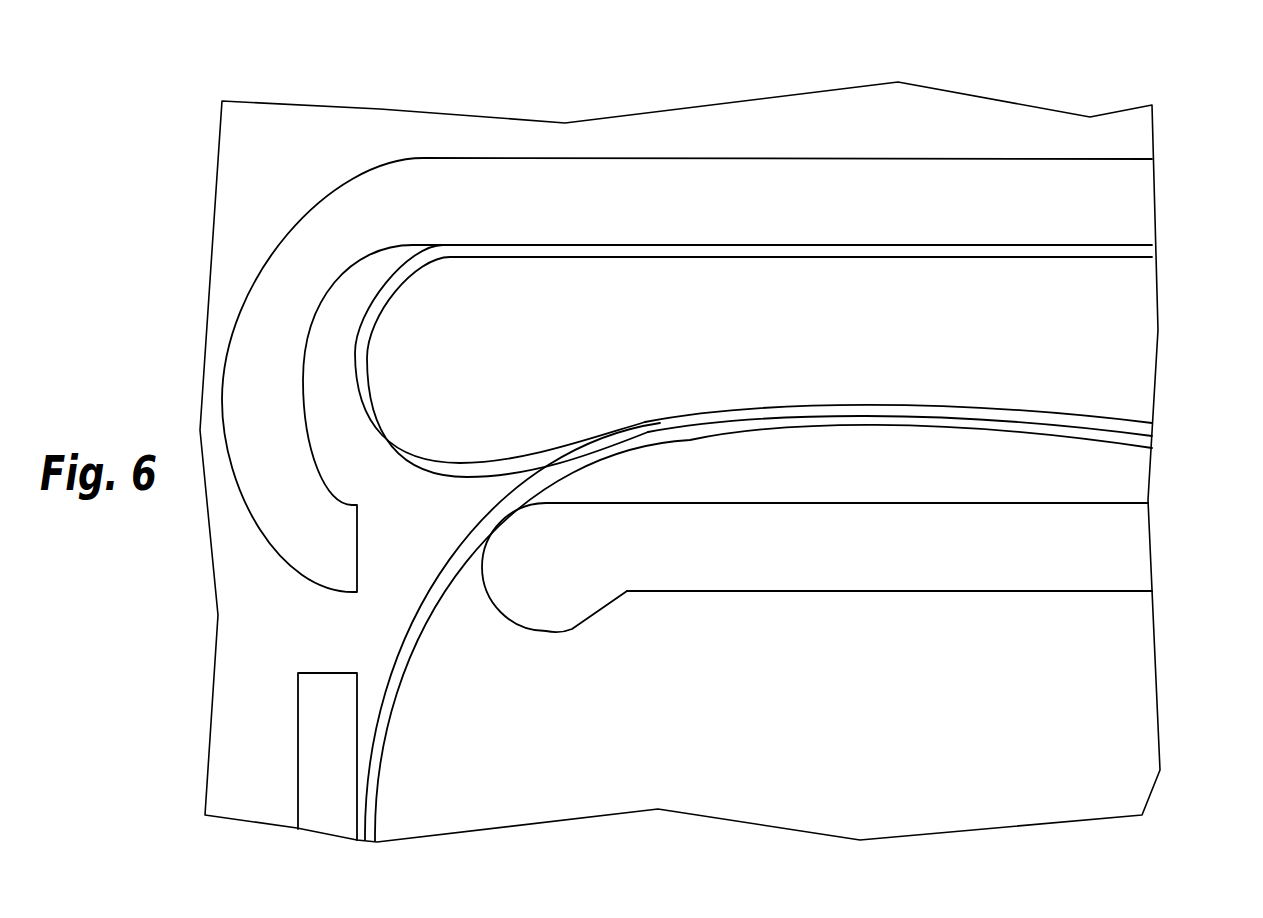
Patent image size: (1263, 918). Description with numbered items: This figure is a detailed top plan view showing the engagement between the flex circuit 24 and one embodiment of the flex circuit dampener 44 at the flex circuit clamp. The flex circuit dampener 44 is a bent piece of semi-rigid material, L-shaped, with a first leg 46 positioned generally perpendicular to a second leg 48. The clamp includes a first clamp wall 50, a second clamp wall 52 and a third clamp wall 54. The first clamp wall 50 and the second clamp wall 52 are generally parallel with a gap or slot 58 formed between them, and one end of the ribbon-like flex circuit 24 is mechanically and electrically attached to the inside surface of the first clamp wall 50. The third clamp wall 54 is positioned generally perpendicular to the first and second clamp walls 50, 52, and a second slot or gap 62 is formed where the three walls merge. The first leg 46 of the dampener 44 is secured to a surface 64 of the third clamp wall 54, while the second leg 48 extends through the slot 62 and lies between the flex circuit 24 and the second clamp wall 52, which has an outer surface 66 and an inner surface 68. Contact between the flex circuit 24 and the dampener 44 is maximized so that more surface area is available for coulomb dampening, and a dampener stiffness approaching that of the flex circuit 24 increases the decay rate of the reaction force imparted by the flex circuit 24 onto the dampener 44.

The flex circuit 24 is at (1100, 245).
The flex circuit dampener 44 is at (673, 430).
The first leg 46 is at (387, 675).
The second leg 48 is at (887, 430).
The first clamp wall 50 is at (1037, 158).
The second clamp wall 52 is at (1115, 557).
The third clamp wall 54 is at (337, 780).
The gap or slot 58 is at (583, 327).
The second slot or gap 62 is at (378, 604).
The surface of the third clamp wall 64 is at (360, 697).
The outer surface of the second clamp wall 66 is at (967, 592).
The inner surface of the second clamp wall 68 is at (1107, 503).